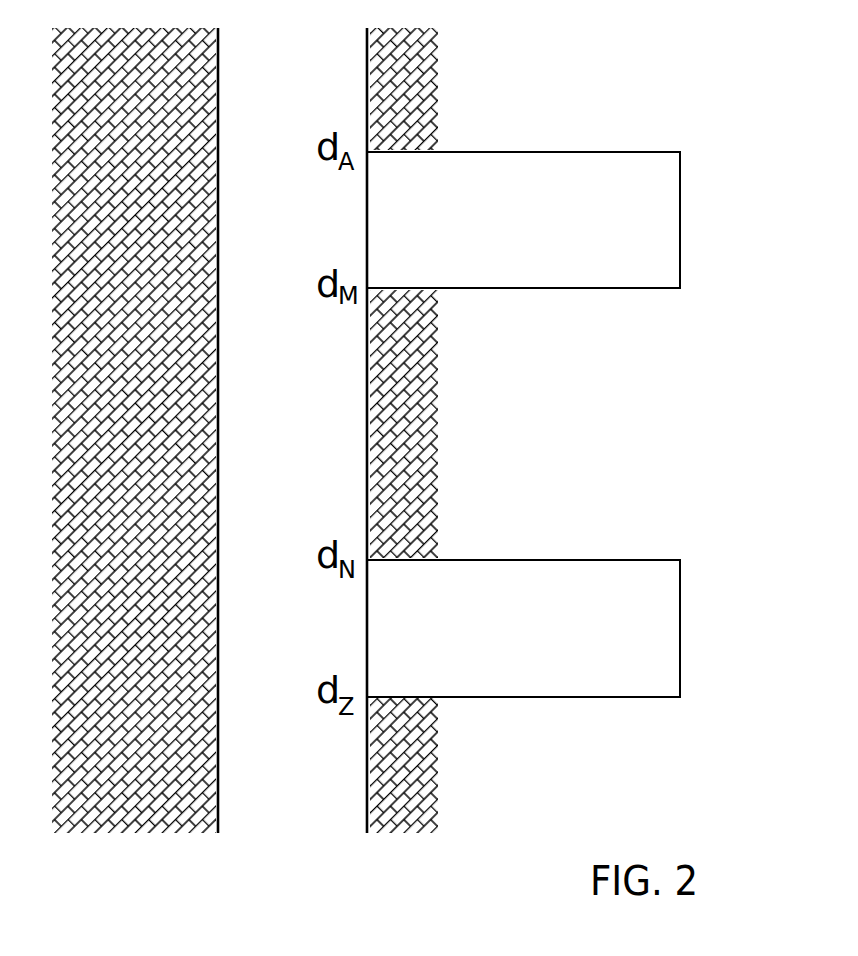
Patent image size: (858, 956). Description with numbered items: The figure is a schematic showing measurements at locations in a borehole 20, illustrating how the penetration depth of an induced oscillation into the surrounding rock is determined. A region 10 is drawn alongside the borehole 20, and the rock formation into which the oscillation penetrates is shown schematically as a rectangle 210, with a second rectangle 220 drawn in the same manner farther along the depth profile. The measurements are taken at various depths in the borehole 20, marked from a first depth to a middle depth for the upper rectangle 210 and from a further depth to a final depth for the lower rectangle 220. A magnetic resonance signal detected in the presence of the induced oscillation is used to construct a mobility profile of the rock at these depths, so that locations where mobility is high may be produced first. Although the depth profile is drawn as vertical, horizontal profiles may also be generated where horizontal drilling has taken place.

The first member 10 is at (514, 55).
The borehole 20 is at (301, 55).
The rock formation 210 is at (665, 219).
The second recess 220 is at (665, 615).